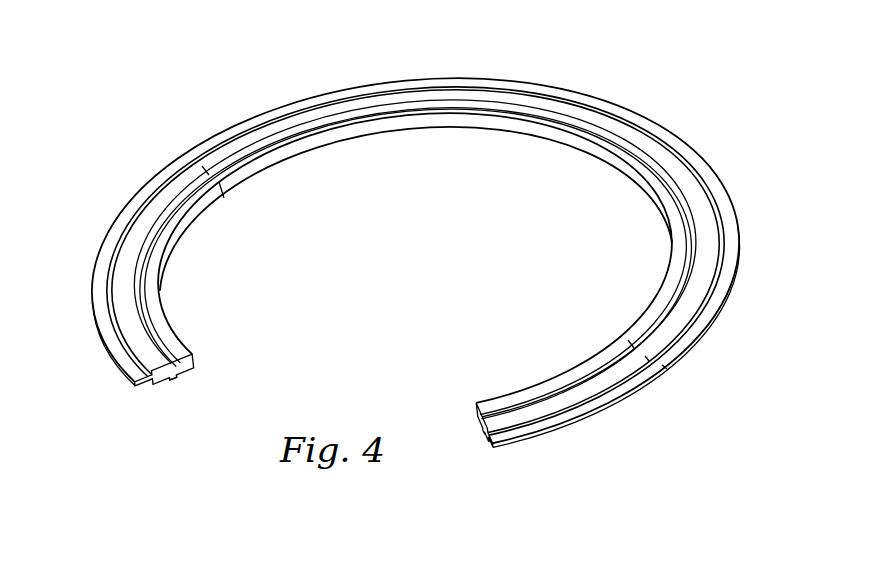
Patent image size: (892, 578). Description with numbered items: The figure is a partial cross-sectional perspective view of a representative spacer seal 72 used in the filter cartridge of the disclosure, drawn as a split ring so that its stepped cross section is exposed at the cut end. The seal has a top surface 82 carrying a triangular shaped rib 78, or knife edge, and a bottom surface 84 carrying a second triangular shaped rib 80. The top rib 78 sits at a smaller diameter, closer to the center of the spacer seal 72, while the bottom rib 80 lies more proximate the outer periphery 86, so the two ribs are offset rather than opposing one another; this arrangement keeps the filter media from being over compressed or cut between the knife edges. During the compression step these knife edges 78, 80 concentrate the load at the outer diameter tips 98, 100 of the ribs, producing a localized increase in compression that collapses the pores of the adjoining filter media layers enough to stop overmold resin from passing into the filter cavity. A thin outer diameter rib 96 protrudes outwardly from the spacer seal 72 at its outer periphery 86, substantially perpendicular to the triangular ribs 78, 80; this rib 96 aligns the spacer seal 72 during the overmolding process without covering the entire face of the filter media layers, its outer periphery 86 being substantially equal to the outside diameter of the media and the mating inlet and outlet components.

The spacer seal 72 is at (186, 84).
The top rib 78 is at (173, 357).
The bottom rib 80 is at (166, 387).
The top surface 82 is at (158, 318).
The bottom surface 84 is at (181, 380).
The outer periphery 86 is at (741, 236).
The outer diameter rib 96 is at (126, 368).
The tip of top knife edge 98 is at (132, 292).
The tip of bottom knife edge 100 is at (484, 420).